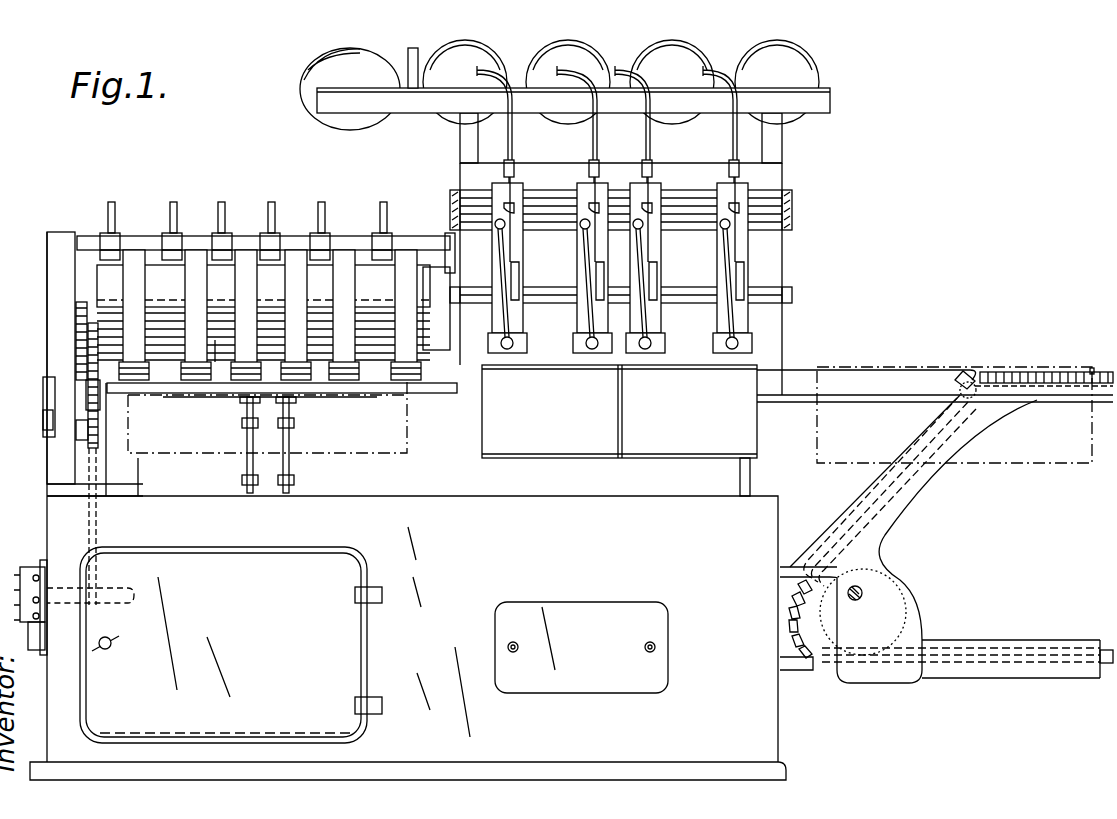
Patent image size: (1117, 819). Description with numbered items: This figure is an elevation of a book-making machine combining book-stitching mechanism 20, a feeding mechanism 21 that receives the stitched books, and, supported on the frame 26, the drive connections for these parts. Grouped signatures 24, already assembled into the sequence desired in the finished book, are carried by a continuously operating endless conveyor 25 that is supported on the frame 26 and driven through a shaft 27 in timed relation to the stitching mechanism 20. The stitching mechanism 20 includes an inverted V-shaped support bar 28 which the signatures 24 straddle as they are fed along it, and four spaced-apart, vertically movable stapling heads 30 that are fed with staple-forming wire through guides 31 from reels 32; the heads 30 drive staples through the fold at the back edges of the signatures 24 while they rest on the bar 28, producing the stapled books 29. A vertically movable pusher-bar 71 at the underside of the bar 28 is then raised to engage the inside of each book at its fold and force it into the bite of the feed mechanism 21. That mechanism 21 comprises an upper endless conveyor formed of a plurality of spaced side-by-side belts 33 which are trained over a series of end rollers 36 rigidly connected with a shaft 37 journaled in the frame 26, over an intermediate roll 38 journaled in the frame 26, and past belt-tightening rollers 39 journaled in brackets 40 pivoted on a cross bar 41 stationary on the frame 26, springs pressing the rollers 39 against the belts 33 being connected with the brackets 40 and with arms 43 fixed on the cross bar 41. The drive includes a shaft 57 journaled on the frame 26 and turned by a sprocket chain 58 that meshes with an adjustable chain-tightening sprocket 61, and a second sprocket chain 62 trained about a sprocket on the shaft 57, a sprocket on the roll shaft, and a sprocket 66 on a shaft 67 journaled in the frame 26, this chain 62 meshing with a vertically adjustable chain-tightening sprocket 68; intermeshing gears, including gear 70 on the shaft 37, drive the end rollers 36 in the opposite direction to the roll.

The book-stitching mechanism 20 is at (804, 181).
The feeding mechanism 21 is at (145, 184).
The grouped signatures 24 is at (348, 453).
The endless conveyor 25 is at (1045, 372).
The frame 26 is at (775, 540).
The shaft 27 is at (858, 600).
The inverted V-shaped support bar 28 is at (432, 393).
The books 29 is at (385, 455).
The stapling heads 30 is at (578, 275).
The guides 31 is at (575, 157).
The reels 32 is at (535, 55).
The upper conveyor belts 33 is at (192, 276).
The end rollers 36 is at (182, 380).
The shaft 37 is at (220, 342).
The intermediate roll 38 is at (232, 307).
The belt-tightening rollers 39 is at (165, 235).
The brackets 40 is at (275, 236).
The cross bar 41 is at (86, 232).
The arms 43 is at (220, 205).
The shaft 57 is at (122, 586).
The sprocket chain 58 is at (40, 562).
The chain-tightening sprocket 61 is at (47, 677).
The sprocket chain 62 is at (90, 460).
The sprocket 66 is at (86, 388).
The shaft 67 is at (76, 402).
The chain-tightening sprocket 68 is at (80, 432).
The gear 70 is at (76, 314).
The pusher-bar 71 is at (226, 466).